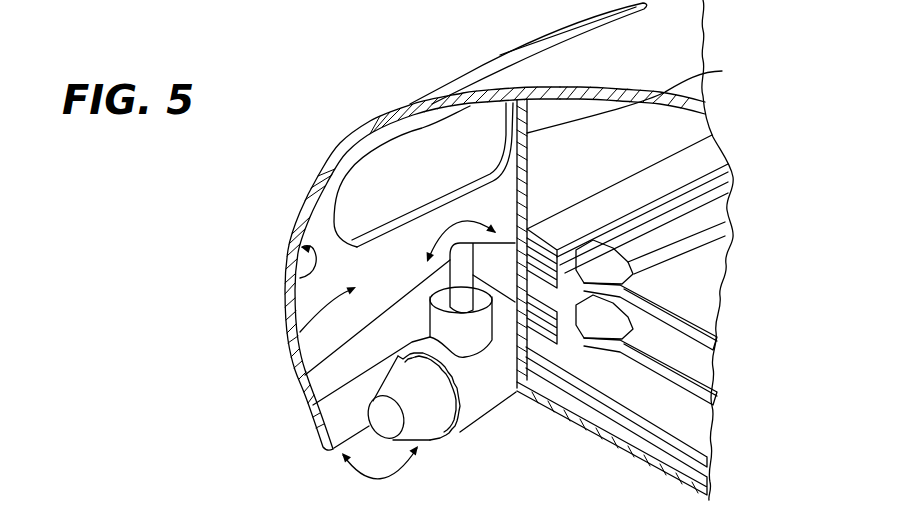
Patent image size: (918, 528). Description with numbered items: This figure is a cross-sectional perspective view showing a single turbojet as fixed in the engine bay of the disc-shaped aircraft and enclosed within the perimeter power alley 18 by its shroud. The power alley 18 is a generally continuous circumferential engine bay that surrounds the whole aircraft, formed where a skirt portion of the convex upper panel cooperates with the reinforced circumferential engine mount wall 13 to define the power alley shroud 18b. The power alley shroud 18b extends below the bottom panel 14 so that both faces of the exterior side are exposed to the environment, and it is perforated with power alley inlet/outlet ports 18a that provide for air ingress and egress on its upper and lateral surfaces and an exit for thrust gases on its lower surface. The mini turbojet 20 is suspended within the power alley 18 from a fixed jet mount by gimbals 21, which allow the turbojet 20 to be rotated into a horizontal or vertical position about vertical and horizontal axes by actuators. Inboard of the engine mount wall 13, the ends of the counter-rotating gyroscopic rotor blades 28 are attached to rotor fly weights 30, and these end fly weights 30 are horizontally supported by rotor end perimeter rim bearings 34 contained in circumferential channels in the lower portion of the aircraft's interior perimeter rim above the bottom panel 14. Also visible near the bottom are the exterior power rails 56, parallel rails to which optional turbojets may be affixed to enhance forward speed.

The reinforced circumferential engine mount wall 13 is at (632, 250).
The bottom panel of disc-shaped aircraft 14 is at (667, 430).
The power alley 18 is at (291, 338).
The power alley inlet/outlet ports 18a is at (413, 155).
The power alley shroud 18b is at (298, 213).
The mini turbojets 20 is at (487, 410).
The gimbals 21 is at (306, 377).
The counter-rotating gyroscopic rotor blades 28 is at (690, 318).
The rotor fly weights 30 is at (600, 325).
The rotor end perimeter rim bearings 34 is at (702, 162).
The exterior power rails 56 is at (620, 450).